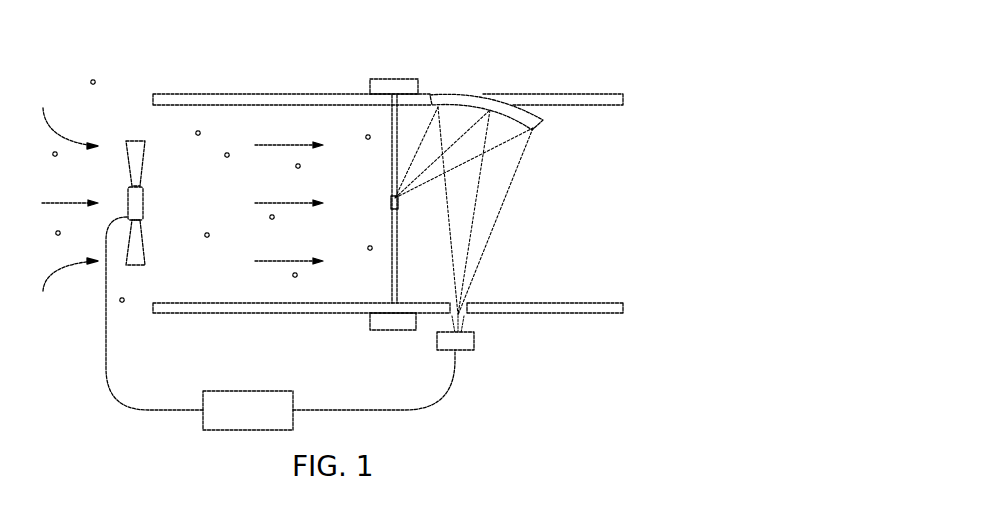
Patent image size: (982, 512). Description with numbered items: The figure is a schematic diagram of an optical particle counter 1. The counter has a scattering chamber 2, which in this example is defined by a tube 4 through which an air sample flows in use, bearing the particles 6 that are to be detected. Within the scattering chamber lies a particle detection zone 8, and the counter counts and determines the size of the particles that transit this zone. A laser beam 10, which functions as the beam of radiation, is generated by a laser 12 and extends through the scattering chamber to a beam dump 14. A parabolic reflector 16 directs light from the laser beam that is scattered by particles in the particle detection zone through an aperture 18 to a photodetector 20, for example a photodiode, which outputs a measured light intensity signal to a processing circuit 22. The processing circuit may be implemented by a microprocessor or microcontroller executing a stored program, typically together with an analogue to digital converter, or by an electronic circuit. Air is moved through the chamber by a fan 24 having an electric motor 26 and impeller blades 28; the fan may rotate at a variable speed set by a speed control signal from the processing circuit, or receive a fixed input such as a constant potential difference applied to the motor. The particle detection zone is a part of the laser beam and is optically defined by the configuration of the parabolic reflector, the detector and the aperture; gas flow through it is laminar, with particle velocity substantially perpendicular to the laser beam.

The optical particle counter 1 is at (234, 56).
The scattering chamber 2 is at (332, 107).
The tube 4 is at (199, 93).
The particles 6 is at (201, 132).
The particle detection zone 8 is at (391, 197).
The laser beam 10 is at (391, 119).
The laser 12 is at (395, 79).
The beam dump 14 is at (395, 330).
The parabolic reflector 16 is at (460, 95).
The aperture 18 is at (462, 318).
The photodetector 20 is at (463, 351).
The processing circuit 22 is at (250, 391).
The fan 24 is at (114, 176).
The electric motor 26 is at (144, 202).
The impeller blades 28 is at (145, 160).